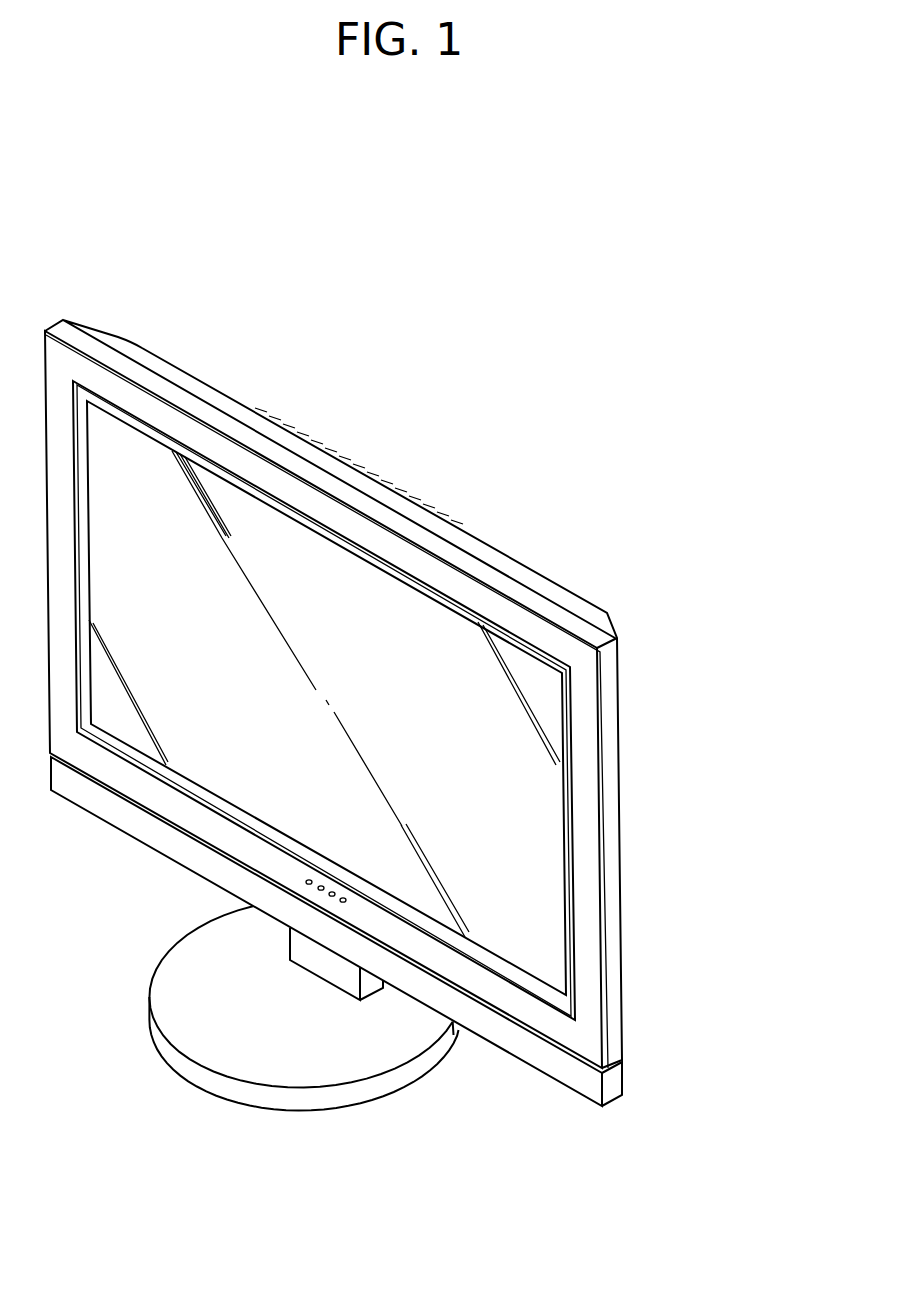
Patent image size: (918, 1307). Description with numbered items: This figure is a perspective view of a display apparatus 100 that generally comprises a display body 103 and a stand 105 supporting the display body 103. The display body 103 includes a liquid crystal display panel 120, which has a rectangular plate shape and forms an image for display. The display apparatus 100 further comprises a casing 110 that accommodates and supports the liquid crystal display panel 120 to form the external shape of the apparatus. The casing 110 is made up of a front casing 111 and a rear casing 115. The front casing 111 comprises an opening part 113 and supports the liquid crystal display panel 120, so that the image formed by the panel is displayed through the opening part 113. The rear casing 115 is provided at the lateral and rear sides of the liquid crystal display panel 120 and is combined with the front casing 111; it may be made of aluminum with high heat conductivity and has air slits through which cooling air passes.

The display apparatus 100 is at (552, 370).
The display body 103 is at (753, 651).
The stand 105 is at (303, 1103).
The casing 110 is at (705, 609).
The front casing 111 is at (587, 700).
The opening part 113 is at (433, 591).
The rear casing 115 is at (598, 605).
The liquid crystal display panel 120 is at (533, 792).